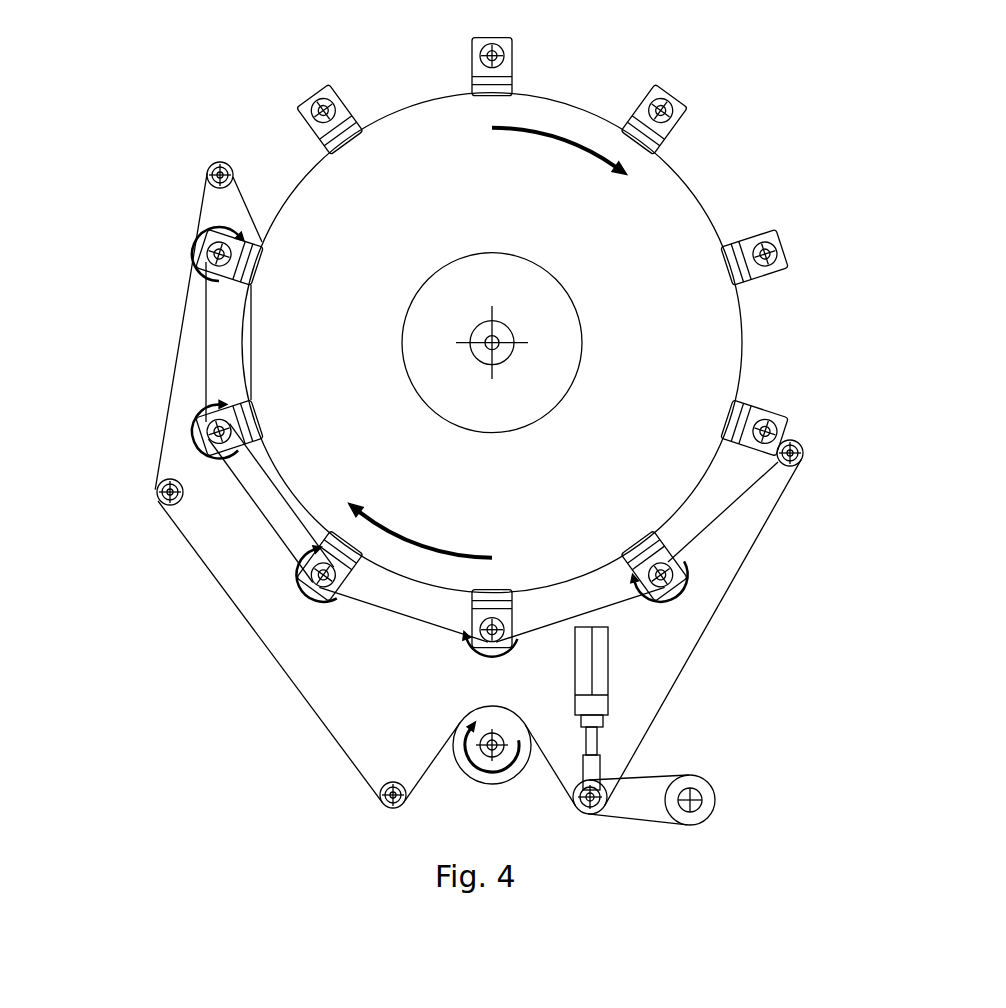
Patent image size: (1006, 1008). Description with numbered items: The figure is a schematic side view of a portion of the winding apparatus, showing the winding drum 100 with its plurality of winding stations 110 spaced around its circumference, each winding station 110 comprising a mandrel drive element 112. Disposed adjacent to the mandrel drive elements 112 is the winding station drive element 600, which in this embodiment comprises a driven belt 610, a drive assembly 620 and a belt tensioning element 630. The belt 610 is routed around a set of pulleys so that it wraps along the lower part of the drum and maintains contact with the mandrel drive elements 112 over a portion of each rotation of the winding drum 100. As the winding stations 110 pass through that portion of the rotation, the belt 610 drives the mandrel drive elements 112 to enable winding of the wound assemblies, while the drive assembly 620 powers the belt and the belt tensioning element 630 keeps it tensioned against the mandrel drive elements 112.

The winding drum 100 is at (492, 214).
The winding station 110 is at (586, 347).
The mandrel drive element 112 is at (770, 262).
The winding station drive element 600 is at (565, 512).
The driven belt 610 is at (743, 572).
The drive assembly 620 is at (710, 785).
The belt tensioning element 630 is at (597, 757).